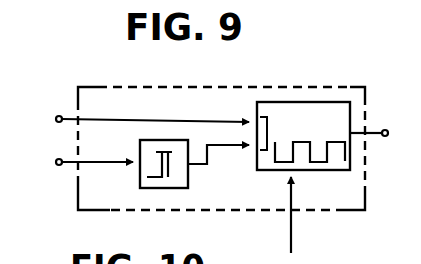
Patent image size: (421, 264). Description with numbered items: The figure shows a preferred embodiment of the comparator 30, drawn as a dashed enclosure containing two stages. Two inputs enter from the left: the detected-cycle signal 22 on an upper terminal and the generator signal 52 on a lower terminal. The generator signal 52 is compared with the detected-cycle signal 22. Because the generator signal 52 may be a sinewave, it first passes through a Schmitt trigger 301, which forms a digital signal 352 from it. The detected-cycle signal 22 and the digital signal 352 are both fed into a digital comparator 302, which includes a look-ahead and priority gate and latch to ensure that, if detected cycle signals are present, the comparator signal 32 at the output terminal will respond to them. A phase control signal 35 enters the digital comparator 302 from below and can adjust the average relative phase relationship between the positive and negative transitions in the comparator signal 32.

The comparator 30 is at (141, 78).
The detected-cycle signal 22 is at (70, 103).
The generator signal 52 is at (55, 166).
The Schmitt trigger 301 is at (175, 188).
The digital signal 352 is at (220, 143).
The digital comparator 302 is at (300, 102).
The comparator signal 32 is at (383, 128).
The phase control signal 35 is at (283, 215).